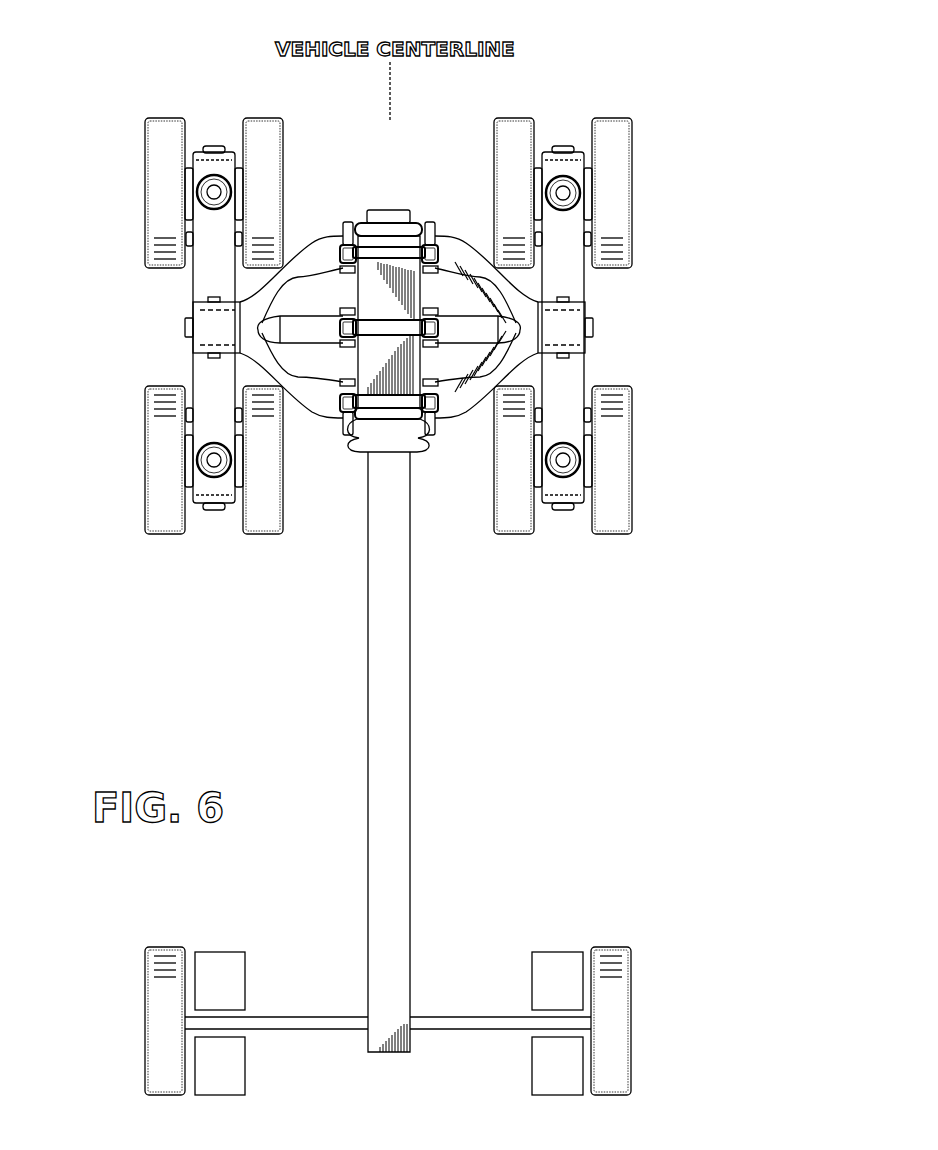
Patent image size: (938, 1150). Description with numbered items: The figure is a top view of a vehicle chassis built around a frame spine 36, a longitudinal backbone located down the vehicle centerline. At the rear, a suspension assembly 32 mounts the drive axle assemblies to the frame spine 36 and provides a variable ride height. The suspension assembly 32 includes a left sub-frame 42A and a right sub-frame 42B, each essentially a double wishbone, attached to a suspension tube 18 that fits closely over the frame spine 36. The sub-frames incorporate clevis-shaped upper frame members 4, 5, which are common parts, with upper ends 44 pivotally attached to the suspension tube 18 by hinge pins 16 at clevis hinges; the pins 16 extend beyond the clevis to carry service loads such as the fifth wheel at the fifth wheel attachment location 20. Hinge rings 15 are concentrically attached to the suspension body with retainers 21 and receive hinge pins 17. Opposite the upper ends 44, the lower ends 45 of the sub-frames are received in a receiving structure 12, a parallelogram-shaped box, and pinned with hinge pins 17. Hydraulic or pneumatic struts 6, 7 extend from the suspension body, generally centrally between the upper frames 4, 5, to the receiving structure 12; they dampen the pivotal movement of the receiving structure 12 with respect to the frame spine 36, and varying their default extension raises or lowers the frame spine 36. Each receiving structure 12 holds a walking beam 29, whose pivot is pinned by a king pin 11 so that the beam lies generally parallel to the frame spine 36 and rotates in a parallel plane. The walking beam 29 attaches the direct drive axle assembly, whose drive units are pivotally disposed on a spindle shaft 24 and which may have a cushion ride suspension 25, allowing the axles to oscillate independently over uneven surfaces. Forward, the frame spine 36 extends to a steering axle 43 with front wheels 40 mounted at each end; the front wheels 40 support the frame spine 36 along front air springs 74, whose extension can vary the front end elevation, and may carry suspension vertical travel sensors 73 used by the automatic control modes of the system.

The upper frame member 4 is at (325, 257).
The upper frame member 5 is at (478, 401).
The extensible strut 6 is at (493, 330).
The extensible strut 7 is at (305, 330).
The king pin 11 is at (185, 328).
The receiving structure 12 is at (193, 303).
The hinge ring 15 is at (405, 327).
The hinge pin 16 is at (342, 274).
The hinge pin 17 is at (214, 359).
The suspension tube 18 is at (425, 288).
The fifth wheel attachment location 20 is at (346, 230).
The retainer 21 is at (364, 222).
The spindle shaft 24 is at (215, 146).
The cushion ride suspension 25 is at (220, 199).
The walking beam 29 is at (200, 367).
The suspension assembly 32 is at (106, 226).
The frame spine 36 is at (386, 210).
The front wheels 40 is at (148, 140).
The left sub-frame 42A is at (302, 448).
The right sub-frame 42B is at (455, 152).
The steering axle 43 is at (330, 1015).
The upper end 44 is at (445, 243).
The lower end 45 is at (196, 343).
The suspension vertical travel sensor 73 is at (222, 965).
The front air spring 74 is at (230, 1085).